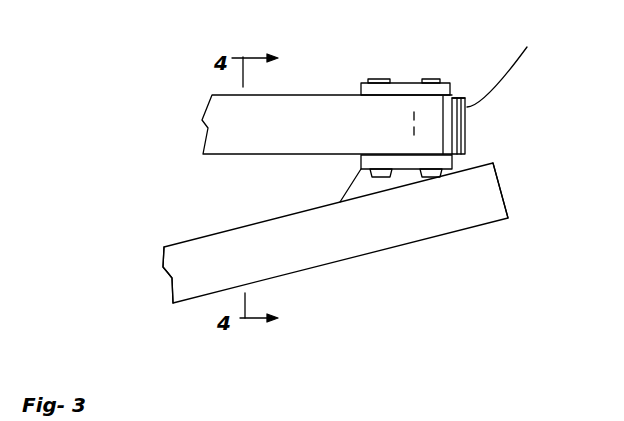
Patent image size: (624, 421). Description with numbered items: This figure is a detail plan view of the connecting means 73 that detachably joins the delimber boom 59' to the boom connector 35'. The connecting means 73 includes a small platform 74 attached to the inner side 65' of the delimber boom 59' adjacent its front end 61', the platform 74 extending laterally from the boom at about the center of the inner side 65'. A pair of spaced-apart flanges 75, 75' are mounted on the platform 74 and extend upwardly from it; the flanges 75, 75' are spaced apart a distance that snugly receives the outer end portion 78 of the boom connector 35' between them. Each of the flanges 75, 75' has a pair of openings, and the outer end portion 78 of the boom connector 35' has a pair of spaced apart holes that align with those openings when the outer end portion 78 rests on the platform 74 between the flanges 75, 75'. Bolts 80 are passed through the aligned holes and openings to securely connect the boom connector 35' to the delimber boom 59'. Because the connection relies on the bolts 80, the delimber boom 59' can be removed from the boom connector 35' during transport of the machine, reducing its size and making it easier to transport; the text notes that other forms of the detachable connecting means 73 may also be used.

The boom connector 35' is at (296, 89).
The flange 75 is at (381, 58).
The bolts 80 is at (432, 79).
The outer end portion 78 is at (503, 66).
The connecting means 73 is at (481, 147).
The flange 75' is at (477, 150).
The platform 74 is at (355, 188).
The inner side 65' is at (156, 235).
The front end 61' is at (543, 190).
The delimber boom 59' is at (378, 234).